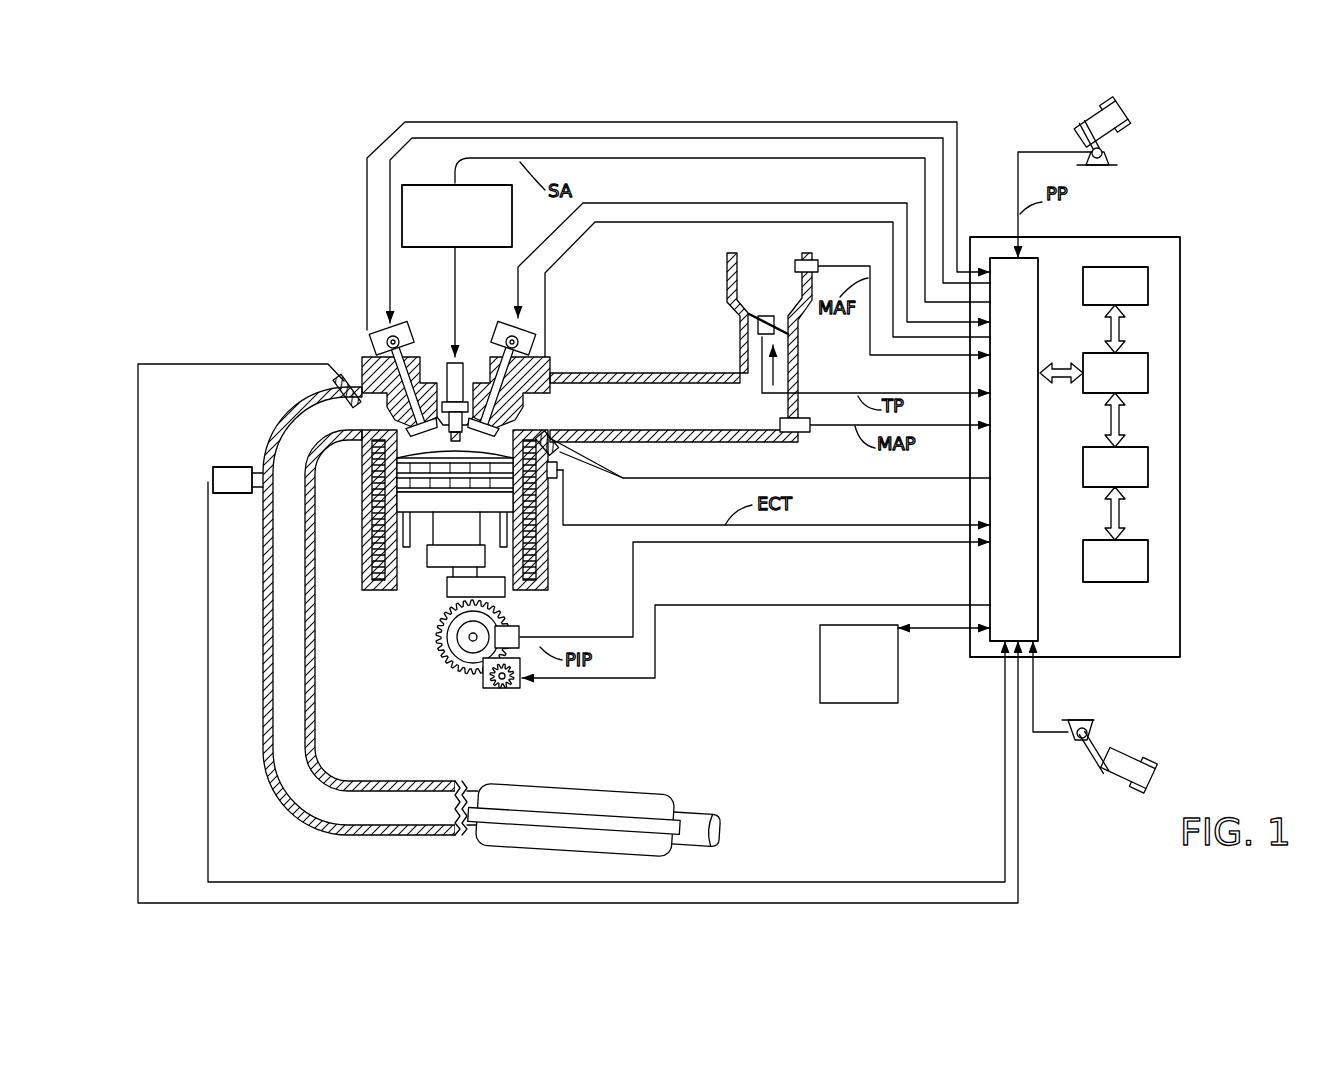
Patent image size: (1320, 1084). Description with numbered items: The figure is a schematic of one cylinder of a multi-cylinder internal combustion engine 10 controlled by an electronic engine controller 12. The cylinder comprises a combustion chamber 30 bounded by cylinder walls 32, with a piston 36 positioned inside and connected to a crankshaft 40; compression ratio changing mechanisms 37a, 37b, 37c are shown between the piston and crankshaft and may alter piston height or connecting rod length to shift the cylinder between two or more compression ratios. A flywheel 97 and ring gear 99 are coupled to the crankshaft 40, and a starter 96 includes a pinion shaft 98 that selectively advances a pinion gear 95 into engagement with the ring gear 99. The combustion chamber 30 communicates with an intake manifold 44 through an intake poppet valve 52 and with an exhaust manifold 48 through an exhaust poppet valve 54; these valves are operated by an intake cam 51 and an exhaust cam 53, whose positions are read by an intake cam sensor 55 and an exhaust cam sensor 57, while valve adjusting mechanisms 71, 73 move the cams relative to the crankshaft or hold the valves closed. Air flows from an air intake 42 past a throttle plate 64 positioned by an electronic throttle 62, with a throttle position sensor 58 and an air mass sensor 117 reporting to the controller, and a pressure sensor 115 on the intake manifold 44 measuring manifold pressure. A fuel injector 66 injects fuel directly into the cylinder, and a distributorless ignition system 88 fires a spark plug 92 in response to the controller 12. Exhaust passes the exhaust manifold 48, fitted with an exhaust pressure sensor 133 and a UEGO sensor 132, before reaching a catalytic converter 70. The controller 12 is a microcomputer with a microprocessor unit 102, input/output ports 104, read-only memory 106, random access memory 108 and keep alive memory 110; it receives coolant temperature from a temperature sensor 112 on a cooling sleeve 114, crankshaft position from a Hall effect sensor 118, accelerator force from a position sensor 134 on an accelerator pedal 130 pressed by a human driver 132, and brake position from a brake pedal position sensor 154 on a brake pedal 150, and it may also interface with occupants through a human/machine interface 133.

The internal combustion engine 10 is at (302, 316).
The electronic engine controller 12 is at (1170, 240).
The combustion chamber 30 is at (395, 460).
The cylinder walls 32 is at (400, 578).
The piston 36 is at (420, 537).
The compression ratio changing mechanism 37a is at (456, 539).
The compression ratio changing mechanism 37b is at (455, 502).
The compression ratio changing mechanism 37c is at (476, 582).
The crankshaft 40 is at (462, 657).
The air intake 42 is at (778, 290).
The intake manifold 44 is at (720, 418).
The exhaust manifold 48 is at (345, 427).
The intake cam 51 is at (508, 325).
The intake poppet valve 52 is at (532, 422).
The exhaust cam 53 is at (400, 327).
The exhaust poppet valve 54 is at (353, 400).
The intake cam sensor 55 is at (533, 337).
The exhaust cam sensor 57 is at (375, 340).
The throttle position sensor 58 is at (753, 338).
The electronic throttle 62 is at (772, 318).
The throttle plate 64 is at (748, 318).
The fuel injector 66 is at (572, 465).
The catalytic converter 70 is at (492, 785).
The valve adjusting mechanism 71 is at (500, 345).
The valve adjusting mechanism 73 is at (413, 340).
The distributorless ignition system 88 is at (412, 185).
The spark plug 92 is at (458, 360).
The pinion gear 95 is at (512, 690).
The starter 96 is at (517, 688).
The flywheel 97 is at (452, 645).
The pinion shaft 98 is at (500, 690).
The ring gear 99 is at (468, 670).
The microprocessor unit 102 is at (1150, 370).
The input/output ports 104 is at (1040, 266).
The read-only memory 106 is at (1150, 284).
The random access memory 108 is at (1150, 466).
The keep alive memory 110 is at (1150, 561).
The temperature sensor 112 is at (560, 480).
The cooling sleeve 114 is at (545, 545).
The pressure sensor 115 is at (800, 434).
The air mass sensor 117 is at (810, 260).
The Hall effect sensor 118 is at (507, 626).
The accelerator pedal 130 is at (1077, 130).
The human driver 132 is at (215, 470).
The exhaust pressure sensor 133 is at (338, 385).
The position sensor 134 is at (1110, 157).
The brake pedal 150 is at (1102, 773).
The brake pedal position sensor 154 is at (1070, 728).